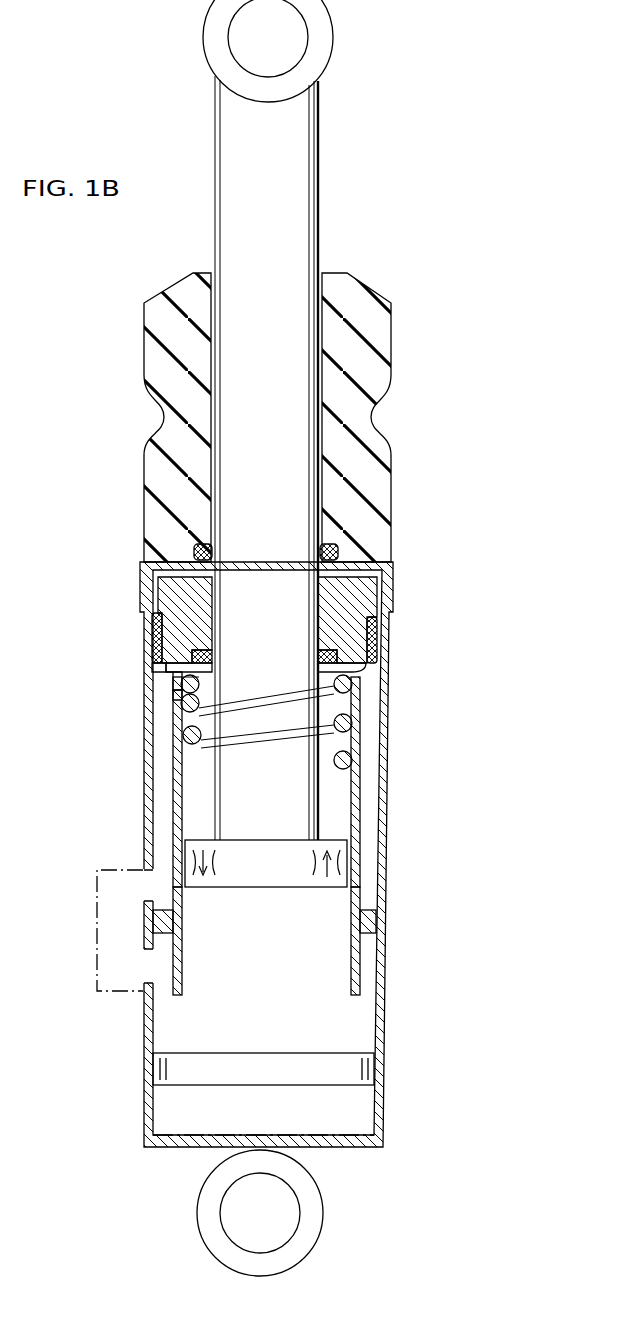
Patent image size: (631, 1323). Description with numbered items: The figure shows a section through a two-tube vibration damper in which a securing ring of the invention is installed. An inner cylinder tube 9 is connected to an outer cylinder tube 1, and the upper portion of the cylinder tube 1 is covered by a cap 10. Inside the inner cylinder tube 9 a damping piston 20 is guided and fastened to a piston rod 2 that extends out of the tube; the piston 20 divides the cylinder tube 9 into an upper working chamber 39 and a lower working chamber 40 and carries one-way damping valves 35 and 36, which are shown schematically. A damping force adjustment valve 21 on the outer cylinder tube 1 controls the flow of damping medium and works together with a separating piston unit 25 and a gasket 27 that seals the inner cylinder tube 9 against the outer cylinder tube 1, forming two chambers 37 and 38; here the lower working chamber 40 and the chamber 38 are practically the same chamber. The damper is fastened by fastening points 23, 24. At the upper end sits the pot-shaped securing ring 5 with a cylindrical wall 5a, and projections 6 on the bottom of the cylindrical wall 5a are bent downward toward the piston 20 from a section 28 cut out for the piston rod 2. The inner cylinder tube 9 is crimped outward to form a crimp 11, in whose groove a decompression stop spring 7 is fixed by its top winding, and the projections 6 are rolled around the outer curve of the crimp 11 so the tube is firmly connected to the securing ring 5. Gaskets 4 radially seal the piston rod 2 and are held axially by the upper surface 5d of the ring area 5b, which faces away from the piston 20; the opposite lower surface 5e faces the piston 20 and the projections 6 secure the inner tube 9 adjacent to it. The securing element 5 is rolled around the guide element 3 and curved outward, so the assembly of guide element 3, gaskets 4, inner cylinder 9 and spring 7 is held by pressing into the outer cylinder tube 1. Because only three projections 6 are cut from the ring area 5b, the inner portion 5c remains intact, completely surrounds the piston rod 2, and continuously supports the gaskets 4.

The outer cylinder tube 1 is at (386, 740).
The piston rod 2 is at (300, 262).
The guide element 3 is at (372, 600).
The gaskets 4 is at (193, 657).
The securing ring 5 is at (364, 672).
The cylindrical wall 5a is at (375, 637).
The ring area 5b is at (356, 690).
The inner portion 5c is at (182, 732).
The upper surface 5d is at (372, 662).
The lower surface 5e is at (370, 712).
The projections 6 is at (165, 686).
The decompression stop spring 7 is at (177, 735).
The inner cylinder tube 9 is at (362, 795).
The cap 10 is at (378, 578).
The crimp 11 is at (177, 694).
The damping piston 20 is at (347, 845).
The damping force adjustment valve 21 is at (97, 908).
The fastening point 23 is at (332, 58).
The fastening point 24 is at (322, 1205).
The separating piston unit 25 is at (372, 1072).
The gasket 27 is at (378, 938).
The section 28 is at (318, 672).
The one-way damping valve 35 is at (345, 864).
The one-way damping valve 36 is at (181, 862).
The chamber 37 is at (372, 897).
The chamber 38 is at (360, 1033).
The upper working chamber 39 is at (190, 800).
The lower working chamber 40 is at (240, 955).